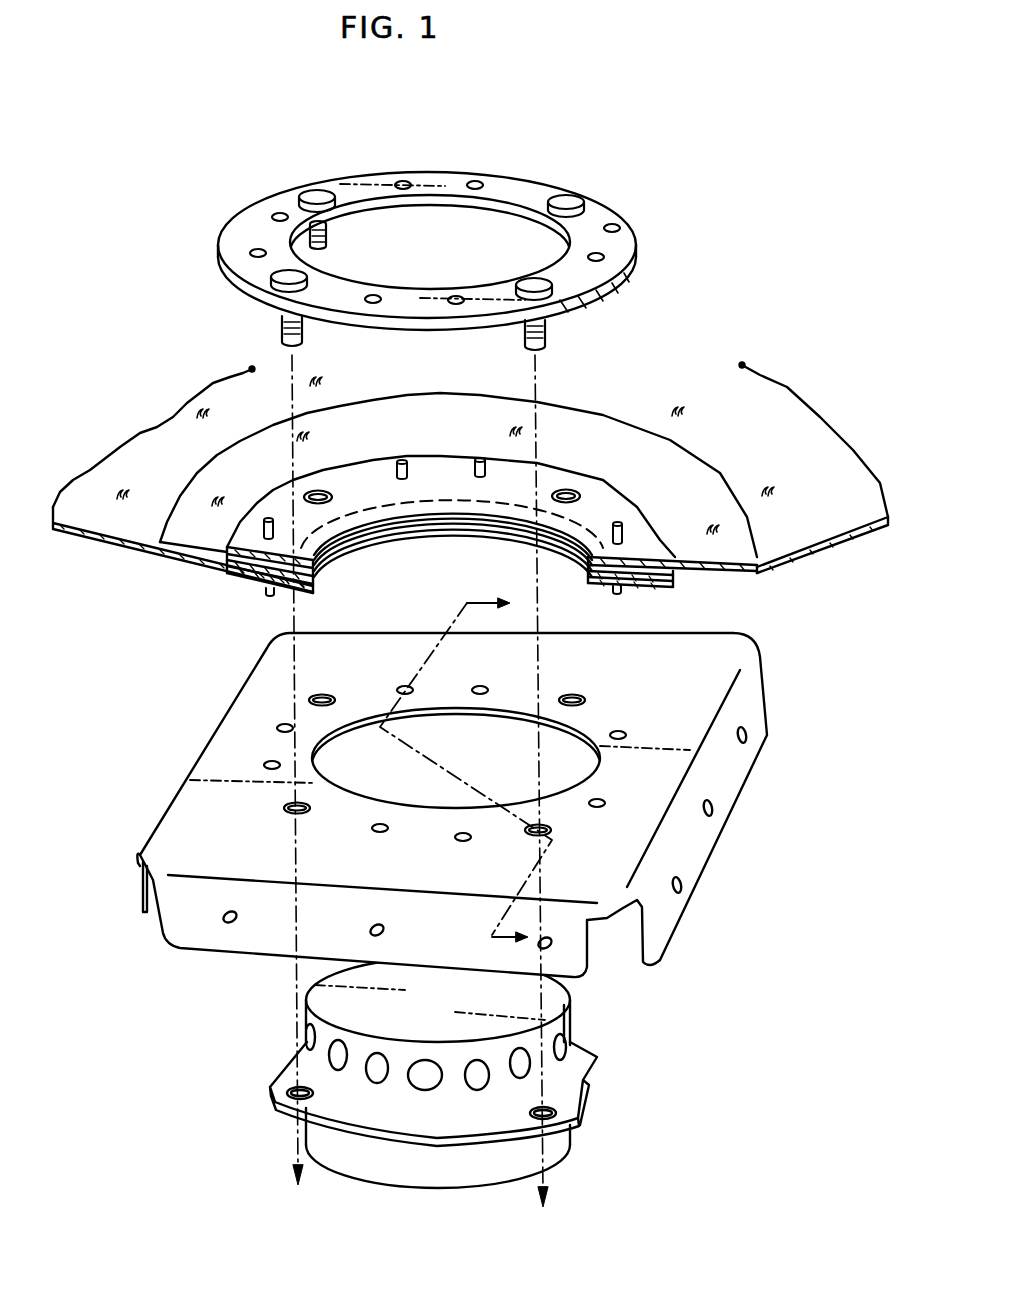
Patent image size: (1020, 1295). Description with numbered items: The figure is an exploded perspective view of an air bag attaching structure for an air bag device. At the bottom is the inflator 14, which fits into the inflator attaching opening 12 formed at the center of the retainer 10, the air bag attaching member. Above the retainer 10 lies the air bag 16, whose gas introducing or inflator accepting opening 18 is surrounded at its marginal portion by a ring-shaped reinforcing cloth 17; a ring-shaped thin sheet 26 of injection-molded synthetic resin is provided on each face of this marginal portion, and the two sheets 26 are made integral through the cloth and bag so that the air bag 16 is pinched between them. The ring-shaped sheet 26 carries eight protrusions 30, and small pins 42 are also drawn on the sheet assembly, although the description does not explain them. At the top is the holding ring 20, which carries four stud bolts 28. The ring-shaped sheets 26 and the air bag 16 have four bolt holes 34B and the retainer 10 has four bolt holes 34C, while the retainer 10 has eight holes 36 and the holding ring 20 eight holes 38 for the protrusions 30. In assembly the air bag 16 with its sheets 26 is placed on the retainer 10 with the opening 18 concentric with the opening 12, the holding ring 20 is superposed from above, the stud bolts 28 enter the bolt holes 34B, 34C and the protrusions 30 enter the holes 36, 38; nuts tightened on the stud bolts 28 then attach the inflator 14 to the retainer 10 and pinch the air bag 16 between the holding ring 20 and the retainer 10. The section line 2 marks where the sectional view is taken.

The retainer 10 is at (735, 650).
The inflator attaching opening 12 is at (353, 733).
The inflator 14 is at (568, 1136).
The air bag 16 is at (805, 538).
The reinforcing cloth 17 is at (716, 553).
The inflator accepting opening 18 is at (430, 540).
The holding ring 20 is at (606, 206).
The ring-shaped thin sheet 26 is at (372, 470).
The stud bolts 28 is at (316, 190).
The protrusions 30 is at (478, 462).
The bolt holes 34B is at (316, 490).
The bolt holes 34C is at (322, 694).
The holes 36 is at (268, 760).
The holes 38 is at (476, 181).
The pins 42 is at (262, 530).
The section line 2- 2 is at (466, 781).